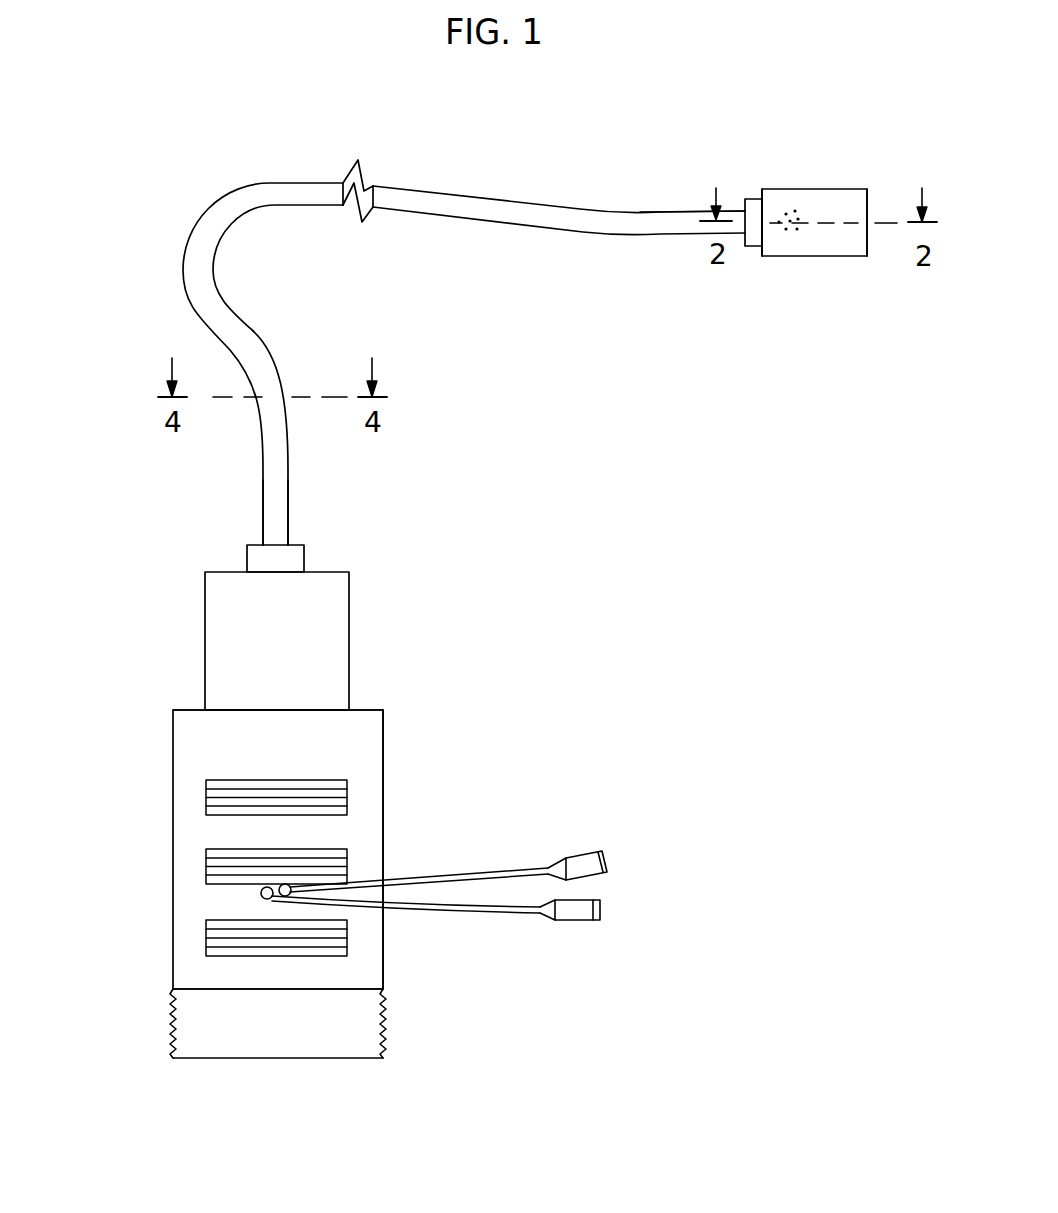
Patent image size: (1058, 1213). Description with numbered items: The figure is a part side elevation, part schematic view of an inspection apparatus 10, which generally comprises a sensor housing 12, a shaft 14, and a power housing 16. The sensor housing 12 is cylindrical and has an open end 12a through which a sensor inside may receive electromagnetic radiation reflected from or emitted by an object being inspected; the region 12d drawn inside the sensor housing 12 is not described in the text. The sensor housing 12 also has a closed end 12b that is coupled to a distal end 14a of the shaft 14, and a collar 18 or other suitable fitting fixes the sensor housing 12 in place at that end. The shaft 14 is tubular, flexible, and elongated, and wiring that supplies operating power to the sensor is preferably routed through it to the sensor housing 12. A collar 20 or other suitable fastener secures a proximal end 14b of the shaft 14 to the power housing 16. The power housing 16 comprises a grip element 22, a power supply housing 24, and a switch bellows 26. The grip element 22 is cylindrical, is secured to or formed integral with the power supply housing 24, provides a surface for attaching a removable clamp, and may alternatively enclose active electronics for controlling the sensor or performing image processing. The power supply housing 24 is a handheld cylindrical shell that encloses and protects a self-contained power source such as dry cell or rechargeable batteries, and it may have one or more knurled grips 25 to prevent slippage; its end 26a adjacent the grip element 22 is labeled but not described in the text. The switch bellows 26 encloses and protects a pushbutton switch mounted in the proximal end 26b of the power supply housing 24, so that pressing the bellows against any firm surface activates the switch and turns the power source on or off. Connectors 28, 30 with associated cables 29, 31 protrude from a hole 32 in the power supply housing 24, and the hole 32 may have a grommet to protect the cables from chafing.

The inspection apparatus 10 is at (440, 582).
The sensor housing 12 is at (812, 248).
The open end 12a is at (868, 202).
The closed end 12b is at (762, 196).
The light sources 12d is at (792, 212).
The shaft 14 is at (483, 212).
The distal end 14a is at (653, 204).
The proximal end 14b is at (263, 527).
The power housing 16 is at (392, 732).
The collar 18 is at (753, 246).
The collar 20 is at (305, 558).
The grip element 22 is at (296, 653).
The power supply housing 24 is at (372, 773).
The knurled grips 25 is at (206, 803).
The switch bellows 26 is at (372, 1028).
The body upper end 26a is at (168, 737).
The proximal end 26b is at (162, 986).
The connector 28 is at (584, 856).
The cable 29 is at (462, 878).
The connector 30 is at (586, 922).
The cable 31 is at (470, 913).
The hole 32 is at (268, 898).